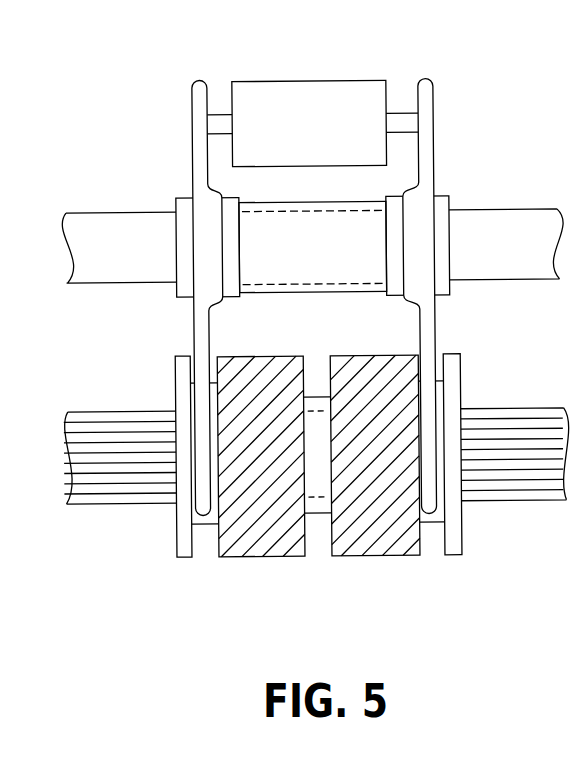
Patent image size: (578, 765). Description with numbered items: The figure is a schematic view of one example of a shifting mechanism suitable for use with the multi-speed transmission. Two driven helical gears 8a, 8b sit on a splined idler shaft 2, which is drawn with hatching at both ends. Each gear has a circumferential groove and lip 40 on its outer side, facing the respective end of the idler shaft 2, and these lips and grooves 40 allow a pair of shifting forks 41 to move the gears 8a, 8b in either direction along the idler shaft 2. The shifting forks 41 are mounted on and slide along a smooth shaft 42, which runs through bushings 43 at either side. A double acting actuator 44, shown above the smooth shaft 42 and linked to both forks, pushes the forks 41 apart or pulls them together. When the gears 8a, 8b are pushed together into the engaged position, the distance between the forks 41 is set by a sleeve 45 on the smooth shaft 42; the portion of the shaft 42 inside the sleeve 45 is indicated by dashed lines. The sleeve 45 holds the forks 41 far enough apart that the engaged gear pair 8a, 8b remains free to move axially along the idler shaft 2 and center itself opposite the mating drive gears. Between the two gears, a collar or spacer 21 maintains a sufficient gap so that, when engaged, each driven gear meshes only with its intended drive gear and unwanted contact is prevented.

The idler shaft 2 is at (515, 409).
The driven helical gear 8a is at (265, 557).
The driven helical gear 8b is at (388, 557).
The collar or spacer 21 is at (318, 514).
The circumferential groove and lip 40 is at (175, 522).
The shifting fork 41 is at (193, 156).
The smooth shaft 42 is at (529, 209).
The bushing 43 is at (177, 295).
The double acting actuator 44 is at (314, 80).
The sleeve 45 is at (313, 293).